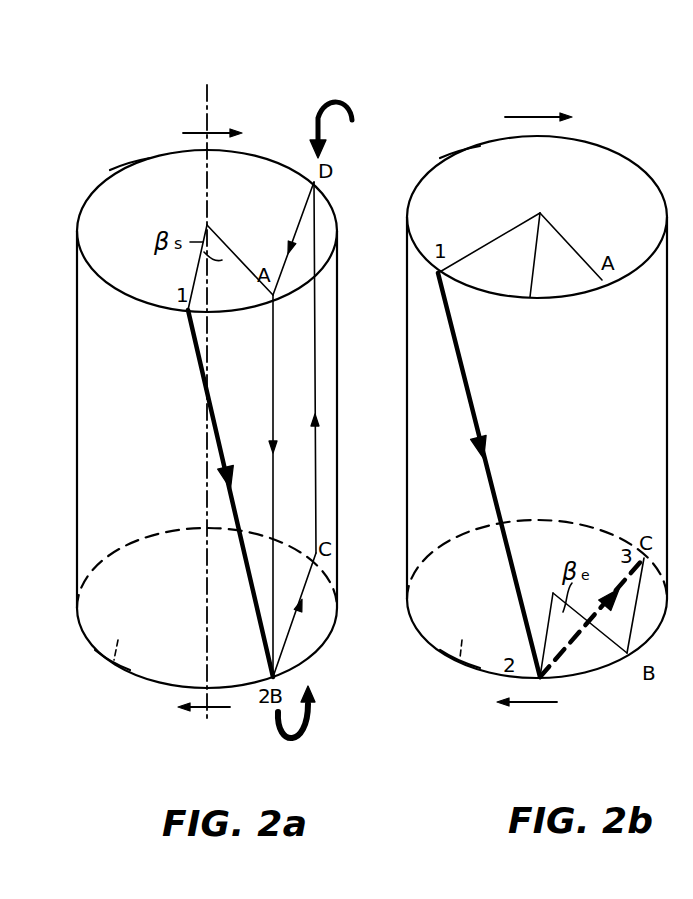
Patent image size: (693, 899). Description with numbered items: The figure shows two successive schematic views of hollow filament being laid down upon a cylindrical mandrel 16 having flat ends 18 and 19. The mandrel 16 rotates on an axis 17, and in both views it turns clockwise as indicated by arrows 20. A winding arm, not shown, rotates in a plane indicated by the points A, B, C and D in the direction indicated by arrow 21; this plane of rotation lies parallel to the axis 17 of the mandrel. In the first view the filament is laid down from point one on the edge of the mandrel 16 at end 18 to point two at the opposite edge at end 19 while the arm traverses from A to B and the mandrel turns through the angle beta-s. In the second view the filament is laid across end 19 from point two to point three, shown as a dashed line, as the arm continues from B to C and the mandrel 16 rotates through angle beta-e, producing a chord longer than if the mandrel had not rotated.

In FIG. 2A, the mandrel 16 is at (78, 400).
In FIG. 2B, the mandrel 16 is at (408, 378).
In FIG. 2A, the axis 17 is at (207, 103).
In FIG. 2A, the flat end 18 is at (128, 186).
In FIG. 2B, the flat end 18 is at (460, 173).
In FIG. 2A, the flat end 19 is at (107, 658).
In FIG. 2B, the flat end 19 is at (458, 662).
In FIG. 2A, the arrows 20 is at (216, 133).
In FIG. 2B, the arrows 20 is at (532, 117).
In FIG. 2A, the arrow 21 is at (352, 108).